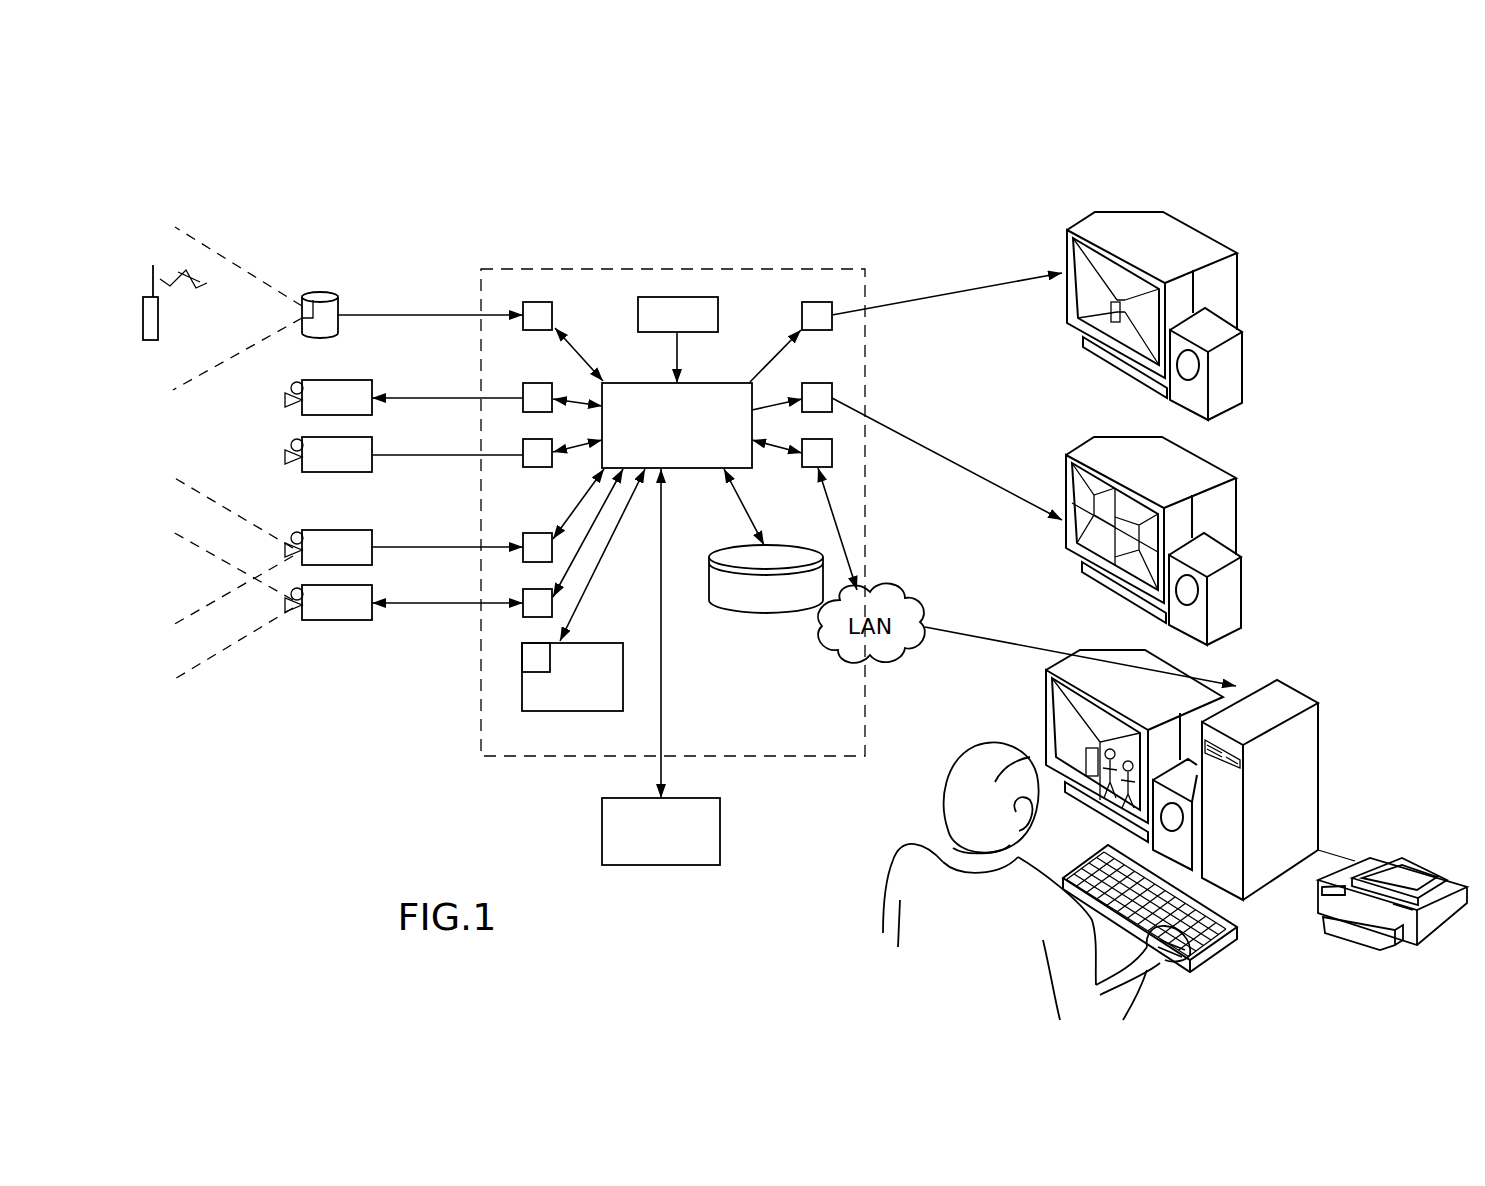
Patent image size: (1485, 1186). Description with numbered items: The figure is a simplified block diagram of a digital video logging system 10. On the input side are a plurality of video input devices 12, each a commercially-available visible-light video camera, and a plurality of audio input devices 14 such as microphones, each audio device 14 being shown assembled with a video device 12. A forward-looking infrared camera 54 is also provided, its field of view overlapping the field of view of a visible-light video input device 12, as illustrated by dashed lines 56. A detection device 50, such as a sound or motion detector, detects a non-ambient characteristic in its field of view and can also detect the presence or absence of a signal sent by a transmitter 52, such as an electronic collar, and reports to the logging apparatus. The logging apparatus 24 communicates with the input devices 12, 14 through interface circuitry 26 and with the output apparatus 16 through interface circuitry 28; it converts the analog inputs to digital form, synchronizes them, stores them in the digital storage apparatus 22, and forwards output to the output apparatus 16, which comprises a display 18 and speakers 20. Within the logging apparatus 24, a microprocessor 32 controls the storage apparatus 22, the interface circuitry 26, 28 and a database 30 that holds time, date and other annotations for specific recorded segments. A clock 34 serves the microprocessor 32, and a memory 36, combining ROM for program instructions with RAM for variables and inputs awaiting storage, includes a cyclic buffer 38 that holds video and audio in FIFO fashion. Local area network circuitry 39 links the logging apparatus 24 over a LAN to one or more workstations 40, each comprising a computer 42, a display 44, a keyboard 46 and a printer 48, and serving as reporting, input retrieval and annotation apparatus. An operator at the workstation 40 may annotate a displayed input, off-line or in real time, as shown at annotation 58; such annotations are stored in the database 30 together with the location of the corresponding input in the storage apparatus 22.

The digital video logging system 10 is at (415, 742).
The video input device 12 is at (325, 380).
The audio input device 14 is at (292, 386).
The output apparatus 16 is at (1184, 408).
The display 18 is at (1087, 226).
The speaker 20 is at (1232, 372).
The digital storage apparatus 22 is at (602, 826).
The logging apparatus 24 is at (538, 268).
The interface circuitry 26 is at (540, 302).
The interface circuitry 28 is at (818, 302).
The database 30 is at (765, 618).
The microprocessor 32 is at (633, 383).
The clock 34 is at (680, 297).
The memory 36 is at (623, 672).
The cyclic buffer 38 is at (522, 664).
The local area network circuitry 39 is at (832, 455).
The workstation 40 is at (1318, 660).
The computer 42 is at (1298, 703).
The display 44 is at (1078, 668).
The keyboard 46 is at (1232, 940).
The printer 48 is at (1397, 858).
The detection device 50 is at (310, 294).
The transmitter 52 is at (156, 342).
The forward-looking infrared camera 54 is at (325, 620).
The dashed lines 56 is at (218, 597).
The annotation 58 is at (1078, 712).